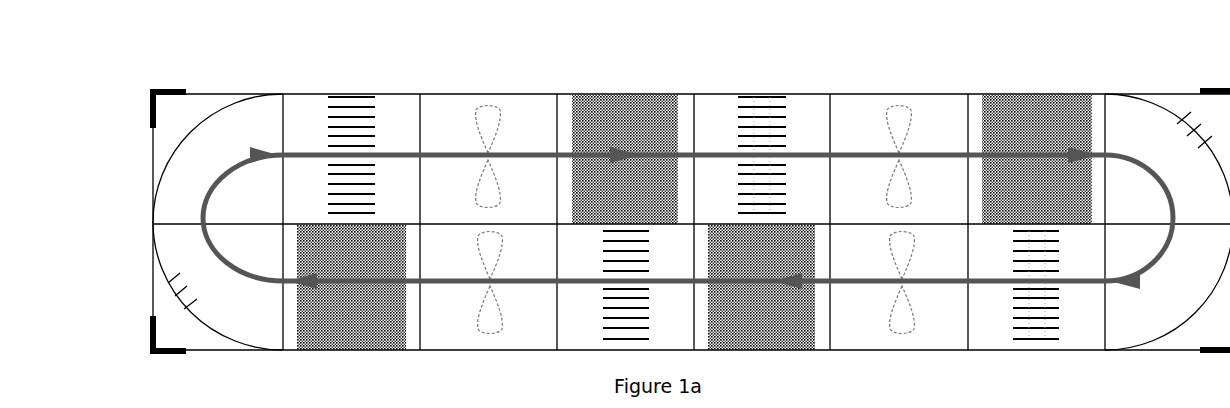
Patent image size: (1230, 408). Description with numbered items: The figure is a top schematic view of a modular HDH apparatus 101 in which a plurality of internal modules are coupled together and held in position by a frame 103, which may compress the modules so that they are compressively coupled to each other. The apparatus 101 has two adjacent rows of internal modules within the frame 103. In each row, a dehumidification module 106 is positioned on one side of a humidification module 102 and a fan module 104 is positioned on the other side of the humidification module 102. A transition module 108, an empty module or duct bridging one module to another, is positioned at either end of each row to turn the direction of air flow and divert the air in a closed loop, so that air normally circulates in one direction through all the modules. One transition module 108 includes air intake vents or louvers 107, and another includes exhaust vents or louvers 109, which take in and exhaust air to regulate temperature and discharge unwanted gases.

The modular HDH apparatus 101 is at (134, 206).
The humidification module 102 is at (573, 94).
The frame 103 is at (151, 96).
The fan module 104 is at (433, 95).
The dehumidification module 106 is at (300, 95).
The air intake vents or louvers 107 is at (168, 288).
The transition module 108 is at (219, 94).
The exhaust vents or louvers 109 is at (1187, 118).